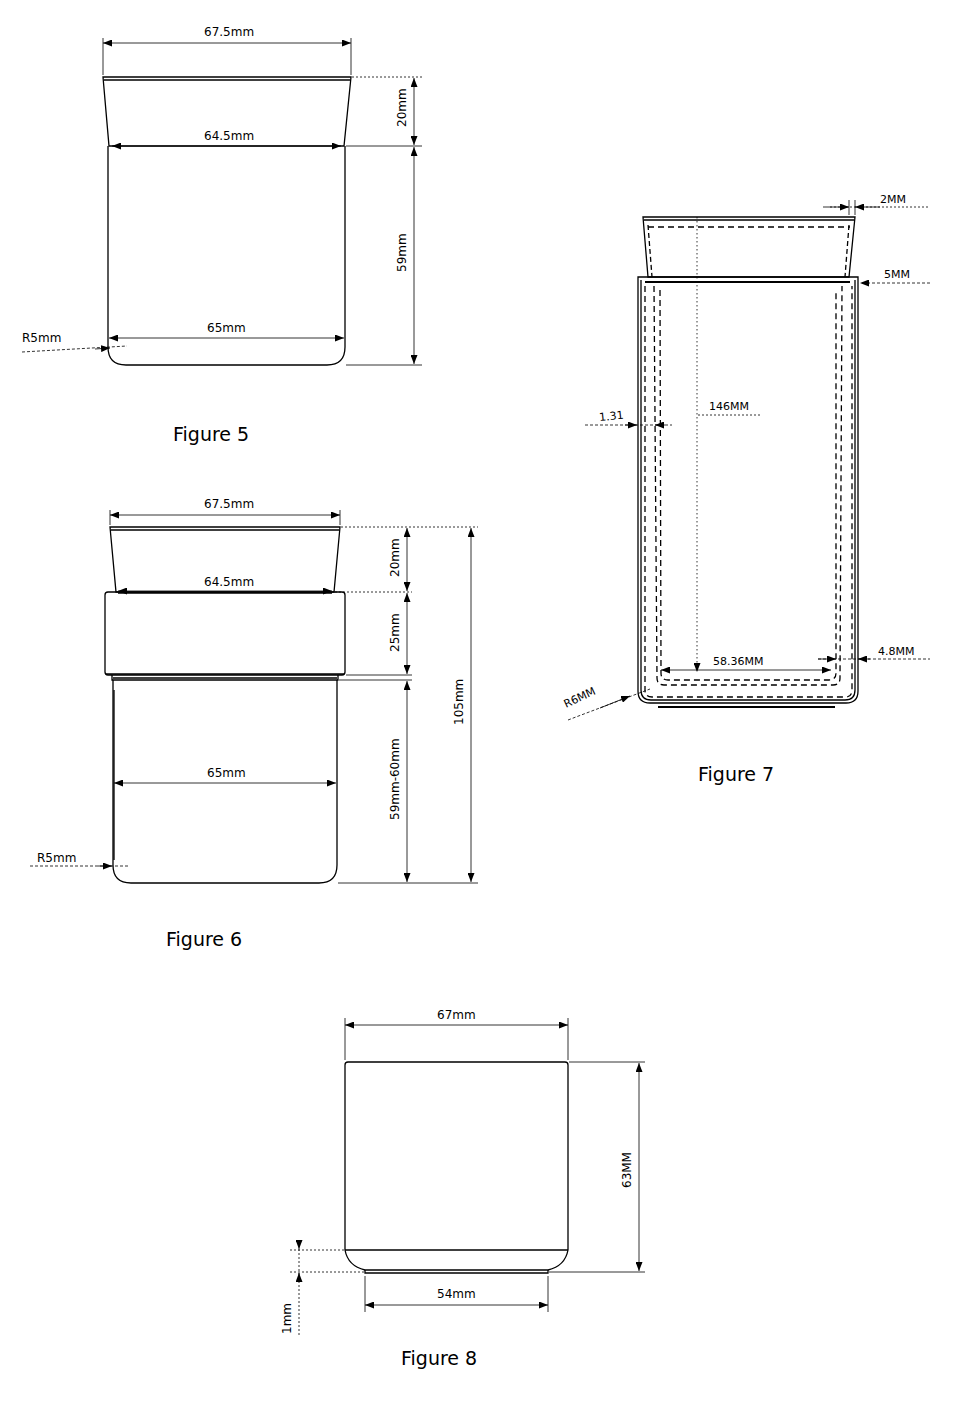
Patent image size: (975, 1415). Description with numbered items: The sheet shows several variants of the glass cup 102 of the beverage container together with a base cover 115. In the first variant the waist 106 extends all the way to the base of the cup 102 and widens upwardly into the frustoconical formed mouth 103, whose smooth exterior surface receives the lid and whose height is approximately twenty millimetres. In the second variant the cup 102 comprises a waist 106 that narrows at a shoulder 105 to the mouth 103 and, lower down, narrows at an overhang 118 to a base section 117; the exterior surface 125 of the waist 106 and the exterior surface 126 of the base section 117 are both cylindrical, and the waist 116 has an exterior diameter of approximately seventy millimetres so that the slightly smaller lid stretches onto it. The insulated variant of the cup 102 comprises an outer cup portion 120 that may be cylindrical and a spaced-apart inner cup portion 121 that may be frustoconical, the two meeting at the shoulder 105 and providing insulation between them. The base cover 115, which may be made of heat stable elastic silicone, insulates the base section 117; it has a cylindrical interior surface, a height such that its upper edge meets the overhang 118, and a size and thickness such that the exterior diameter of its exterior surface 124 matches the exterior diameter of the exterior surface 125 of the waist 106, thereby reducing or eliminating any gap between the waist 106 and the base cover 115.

In FIG. 5, the glass cup 102 is at (287, 216).
In FIG. 6, the glass cup 102 is at (258, 643).
In FIG. 7, the glass cup 102 is at (727, 408).
In FIG. 5, the formed mouth 103 is at (100, 103).
In FIG. 6, the formed mouth 103 is at (108, 561).
In FIG. 7, the formed mouth 103 is at (640, 245).
In FIG. 6, the shoulder 105 is at (215, 594).
In FIG. 6, the waist 106 is at (103, 636).
In FIG. 8, the base cover 115 is at (481, 1134).
In FIG. 5, the waist 116 is at (106, 242).
In FIG. 6, the base section 117 is at (110, 765).
In FIG. 6, the overhang 118 is at (218, 676).
In FIG. 7, the outer cup portion 120 is at (634, 511).
In FIG. 7, the inner cup portion 121 is at (832, 503).
In FIG. 8, the exterior surface of the base cover 124 is at (345, 1155).
In FIG. 6, the exterior surface of the waist 125 is at (100, 666).
In FIG. 6, the exterior surface of the base section 126 is at (112, 808).